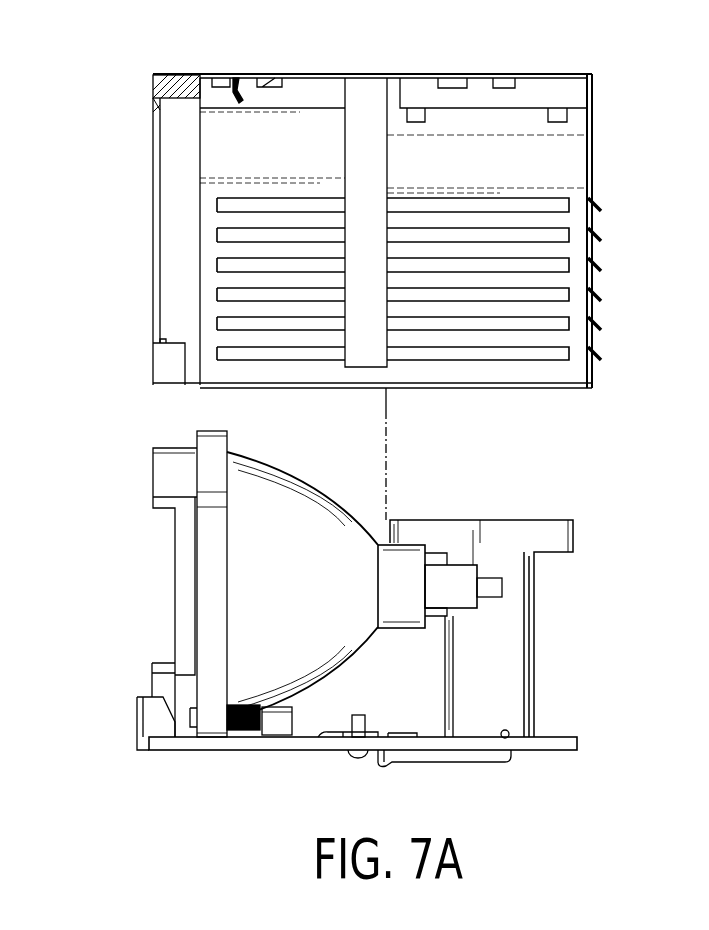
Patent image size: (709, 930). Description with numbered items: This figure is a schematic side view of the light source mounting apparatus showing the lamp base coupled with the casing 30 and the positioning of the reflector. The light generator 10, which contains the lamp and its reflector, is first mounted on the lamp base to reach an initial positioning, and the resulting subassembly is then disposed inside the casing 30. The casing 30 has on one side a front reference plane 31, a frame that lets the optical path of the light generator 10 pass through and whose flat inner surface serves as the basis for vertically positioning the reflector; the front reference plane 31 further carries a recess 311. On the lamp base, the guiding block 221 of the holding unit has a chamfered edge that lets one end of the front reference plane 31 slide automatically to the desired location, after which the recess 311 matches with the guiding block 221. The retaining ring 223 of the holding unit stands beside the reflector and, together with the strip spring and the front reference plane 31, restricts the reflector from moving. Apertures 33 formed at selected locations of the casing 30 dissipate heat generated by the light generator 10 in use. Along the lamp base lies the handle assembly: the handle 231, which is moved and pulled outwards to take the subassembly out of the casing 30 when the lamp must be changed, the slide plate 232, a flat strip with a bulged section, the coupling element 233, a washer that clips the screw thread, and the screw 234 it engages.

The light generator 10 is at (177, 470).
The casing 30 is at (537, 73).
The front reference plane 31 is at (152, 108).
The recess 311 is at (168, 373).
The apertures 33 is at (598, 293).
The guiding block 221 is at (157, 717).
The retaining ring 223 is at (220, 449).
The handle 231 is at (513, 752).
The slide plate 232 is at (390, 763).
The coupling element 233 is at (318, 748).
The screw 234 is at (353, 753).